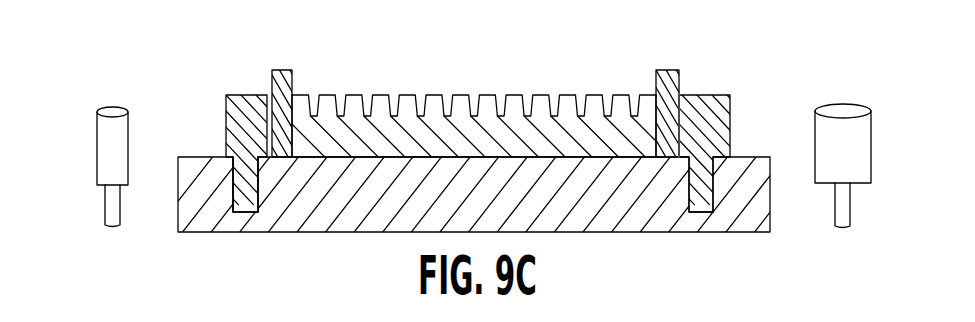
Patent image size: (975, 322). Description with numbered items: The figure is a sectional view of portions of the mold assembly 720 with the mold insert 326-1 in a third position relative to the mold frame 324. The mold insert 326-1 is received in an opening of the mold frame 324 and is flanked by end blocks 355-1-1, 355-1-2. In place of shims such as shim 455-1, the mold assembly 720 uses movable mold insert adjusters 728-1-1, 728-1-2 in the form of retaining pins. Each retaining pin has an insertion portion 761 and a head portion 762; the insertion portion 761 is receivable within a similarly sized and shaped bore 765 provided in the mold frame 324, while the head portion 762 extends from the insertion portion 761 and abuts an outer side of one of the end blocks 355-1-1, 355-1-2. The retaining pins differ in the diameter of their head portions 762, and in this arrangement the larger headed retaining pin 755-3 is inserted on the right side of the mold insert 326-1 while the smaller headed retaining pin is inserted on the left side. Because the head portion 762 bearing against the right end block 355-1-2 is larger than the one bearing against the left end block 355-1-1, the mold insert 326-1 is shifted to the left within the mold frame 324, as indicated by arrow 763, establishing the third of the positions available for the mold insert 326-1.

The mold assembly 720 is at (75, 133).
The shim 455-1 is at (98, 157).
The head portion 762 is at (225, 131).
The movable mold insert adjuster 728-1-1 is at (186, 106).
The end block 355-1-1 is at (282, 70).
The arrow 763 is at (482, 137).
The mold insert 326-1 is at (540, 95).
The end block 355-1-2 is at (672, 70).
The movable mold insert adjuster 728-1-2 is at (645, 106).
The retaining pin 755-3 is at (866, 152).
The mold frame 324 is at (771, 207).
The bore 765 is at (233, 188).
The insertion portion 761 is at (259, 195).